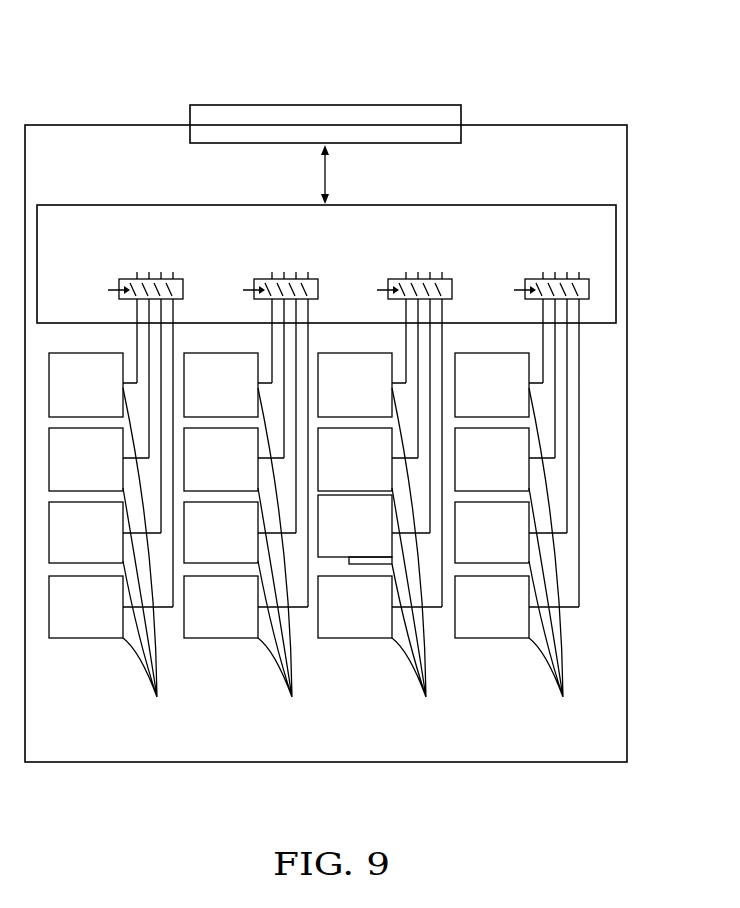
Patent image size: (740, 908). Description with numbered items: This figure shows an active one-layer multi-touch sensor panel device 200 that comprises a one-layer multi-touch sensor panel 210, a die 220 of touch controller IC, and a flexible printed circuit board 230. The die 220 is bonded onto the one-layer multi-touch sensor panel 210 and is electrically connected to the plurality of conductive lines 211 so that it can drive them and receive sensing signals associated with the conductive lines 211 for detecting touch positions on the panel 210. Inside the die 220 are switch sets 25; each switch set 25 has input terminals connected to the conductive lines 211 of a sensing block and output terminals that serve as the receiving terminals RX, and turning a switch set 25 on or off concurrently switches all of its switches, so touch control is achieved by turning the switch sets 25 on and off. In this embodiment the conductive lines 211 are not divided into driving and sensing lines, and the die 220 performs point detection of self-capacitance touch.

The active one-layer multi-touch sensor panel device 200 is at (121, 24).
The one-layer multi-touch sensor panel 210 is at (332, 762).
The conductive lines 211 is at (351, 559).
The die of touch controller IC 220 is at (325, 105).
The flexible printed circuit board 230 is at (110, 205).
The switch set 25 is at (523, 287).